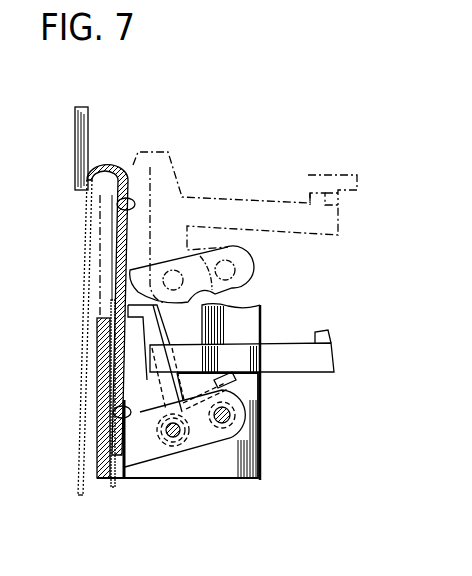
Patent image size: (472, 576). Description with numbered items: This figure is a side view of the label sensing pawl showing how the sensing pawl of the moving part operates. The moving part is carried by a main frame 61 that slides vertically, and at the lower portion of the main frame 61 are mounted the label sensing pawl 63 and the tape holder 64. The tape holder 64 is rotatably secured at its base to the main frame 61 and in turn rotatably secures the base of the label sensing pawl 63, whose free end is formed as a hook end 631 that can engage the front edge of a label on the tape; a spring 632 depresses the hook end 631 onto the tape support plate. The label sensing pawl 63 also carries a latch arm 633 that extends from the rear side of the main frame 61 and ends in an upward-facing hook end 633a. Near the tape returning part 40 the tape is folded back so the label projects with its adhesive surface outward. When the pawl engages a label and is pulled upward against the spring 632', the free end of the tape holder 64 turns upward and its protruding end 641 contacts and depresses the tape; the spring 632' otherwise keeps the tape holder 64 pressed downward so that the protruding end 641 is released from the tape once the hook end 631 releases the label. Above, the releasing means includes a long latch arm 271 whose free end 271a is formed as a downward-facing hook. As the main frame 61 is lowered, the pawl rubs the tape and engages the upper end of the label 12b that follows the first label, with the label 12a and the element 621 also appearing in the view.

The spring plate 621 is at (88, 135).
The tape returning part 40 is at (118, 175).
The upper guide portion 12a is at (130, 203).
The long latch arm 271 is at (345, 185).
The free end 271a is at (318, 196).
The hook end 631 is at (198, 268).
The hook end 633a is at (323, 331).
The latch arm 633 is at (263, 343).
The label sensing pawl 63 is at (147, 338).
The spring 632' is at (252, 392).
The label 12b is at (125, 414).
The main frame 61 is at (245, 468).
The protruding end 641 is at (116, 486).
The tape holder 64 is at (150, 445).
The spring 632 is at (185, 462).